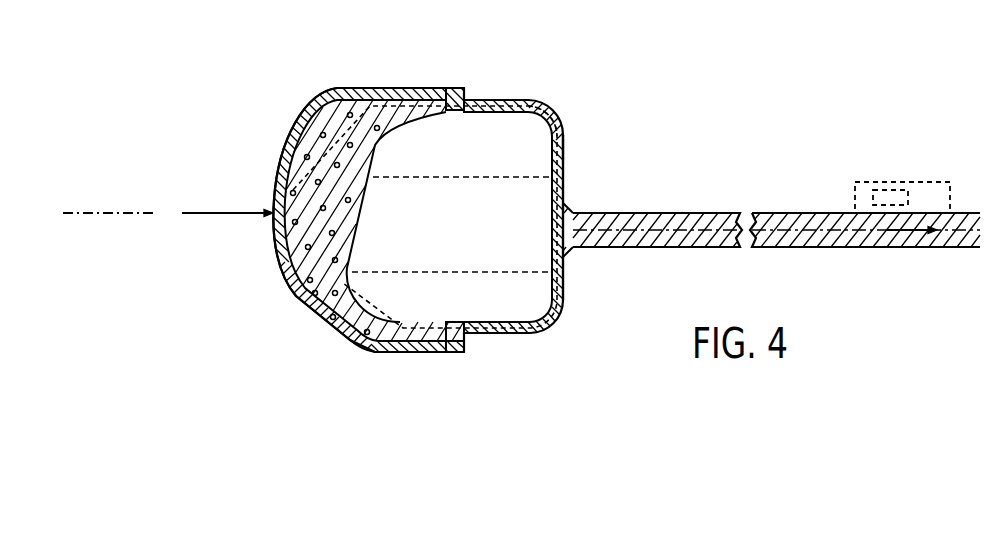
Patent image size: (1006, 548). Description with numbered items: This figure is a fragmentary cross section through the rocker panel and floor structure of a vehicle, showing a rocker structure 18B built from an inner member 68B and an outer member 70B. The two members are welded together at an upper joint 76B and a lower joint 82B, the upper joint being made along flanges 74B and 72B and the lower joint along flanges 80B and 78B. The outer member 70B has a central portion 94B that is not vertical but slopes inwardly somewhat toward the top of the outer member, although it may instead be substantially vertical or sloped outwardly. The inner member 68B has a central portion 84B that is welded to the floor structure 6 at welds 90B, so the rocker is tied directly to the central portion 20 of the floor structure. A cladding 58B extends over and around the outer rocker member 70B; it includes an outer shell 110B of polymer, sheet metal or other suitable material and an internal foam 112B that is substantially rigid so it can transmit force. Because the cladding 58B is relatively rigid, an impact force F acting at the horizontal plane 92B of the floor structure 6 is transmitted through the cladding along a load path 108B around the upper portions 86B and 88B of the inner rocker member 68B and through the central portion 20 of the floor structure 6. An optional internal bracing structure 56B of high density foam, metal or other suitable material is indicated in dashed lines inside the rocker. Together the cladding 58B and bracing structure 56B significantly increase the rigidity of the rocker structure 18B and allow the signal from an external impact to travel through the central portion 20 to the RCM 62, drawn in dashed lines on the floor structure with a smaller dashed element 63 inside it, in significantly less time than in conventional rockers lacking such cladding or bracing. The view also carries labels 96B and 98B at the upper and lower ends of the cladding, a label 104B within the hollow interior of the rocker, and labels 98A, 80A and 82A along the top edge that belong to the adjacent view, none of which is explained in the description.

The rocker structure 18B is at (515, 96).
The upper portion of inner rocker member 86B is at (493, 102).
The flange 74B is at (425, 88).
The upper joint 76B is at (447, 90).
The flange 72B is at (467, 100).
The inner bracing structure 56B is at (558, 110).
The inner member 68B is at (570, 143).
The central portion of inner member 84B is at (565, 177).
The welds 90B is at (567, 210).
The central portion of floor structure 20 is at (692, 213).
The floor structure 6 is at (762, 213).
The RCM 62 is at (920, 182).
The sensor 63 is at (888, 190).
The flange 78B is at (468, 348).
The joint 82B is at (452, 340).
The flange 80B is at (437, 350).
The upper portion of inner rocker member 88B is at (517, 337).
The lower foam region 98B is at (380, 353).
The upper foam region 96B is at (397, 88).
The central portion of outer member 94B is at (358, 213).
The outer member 70B is at (462, 154).
The cavity 104B is at (487, 217).
The load path 108B is at (423, 320).
The horizontal plane 92B is at (125, 212).
The outer shell 110B is at (277, 235).
The cladding 58B is at (276, 270).
The internal foam 112B is at (293, 300).
The lower foam region (fig. 3) 98A is at (326, 0).
The lower left wall segment (fig. 3) 80A is at (384, 10).
The lower joint (fig. 3) 82A is at (452, 6).